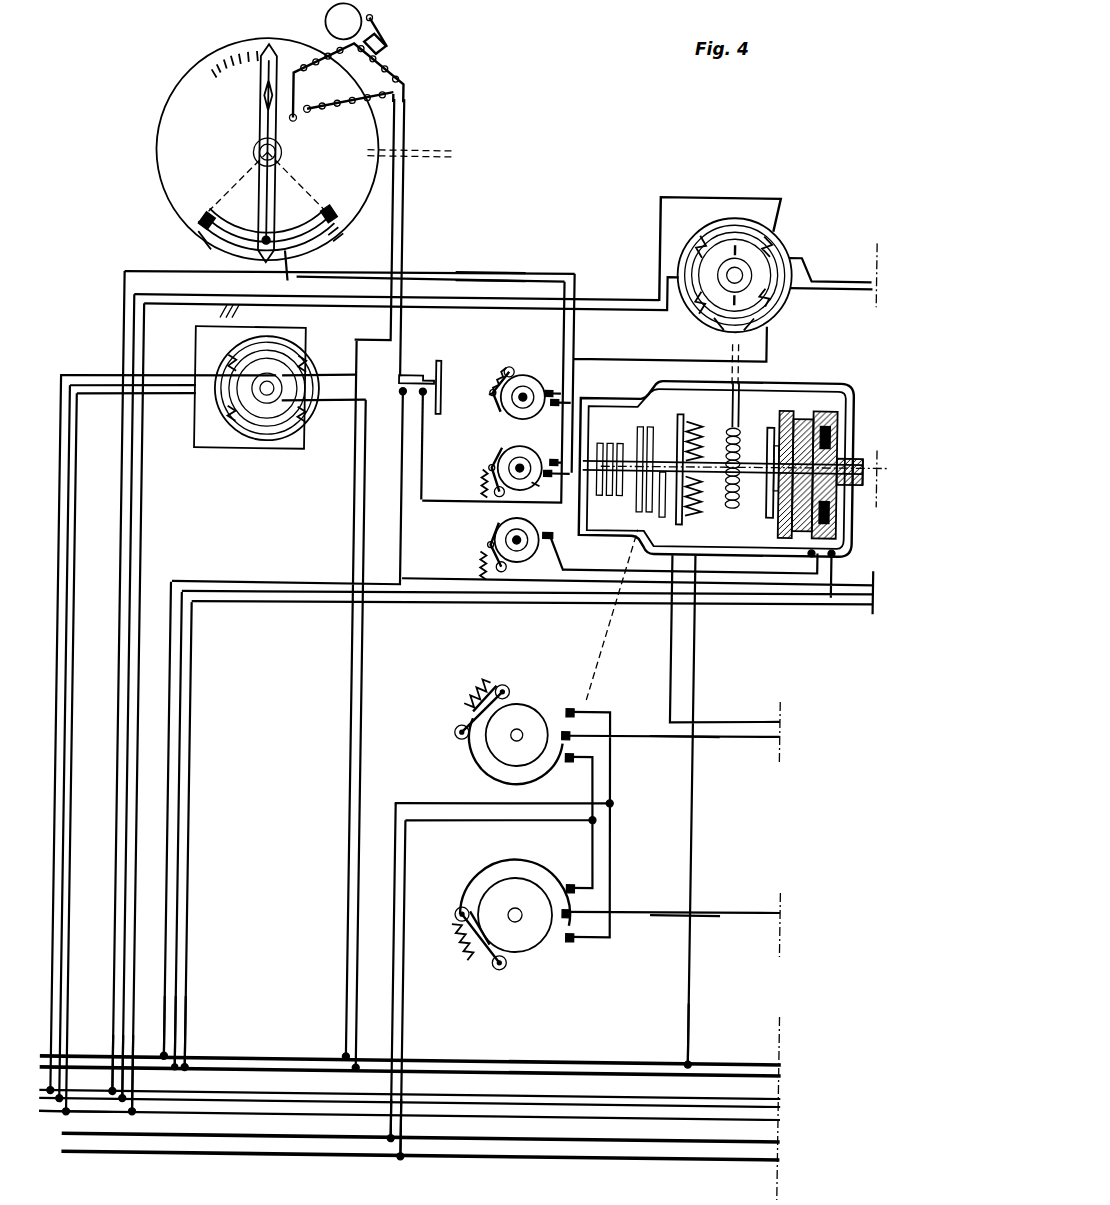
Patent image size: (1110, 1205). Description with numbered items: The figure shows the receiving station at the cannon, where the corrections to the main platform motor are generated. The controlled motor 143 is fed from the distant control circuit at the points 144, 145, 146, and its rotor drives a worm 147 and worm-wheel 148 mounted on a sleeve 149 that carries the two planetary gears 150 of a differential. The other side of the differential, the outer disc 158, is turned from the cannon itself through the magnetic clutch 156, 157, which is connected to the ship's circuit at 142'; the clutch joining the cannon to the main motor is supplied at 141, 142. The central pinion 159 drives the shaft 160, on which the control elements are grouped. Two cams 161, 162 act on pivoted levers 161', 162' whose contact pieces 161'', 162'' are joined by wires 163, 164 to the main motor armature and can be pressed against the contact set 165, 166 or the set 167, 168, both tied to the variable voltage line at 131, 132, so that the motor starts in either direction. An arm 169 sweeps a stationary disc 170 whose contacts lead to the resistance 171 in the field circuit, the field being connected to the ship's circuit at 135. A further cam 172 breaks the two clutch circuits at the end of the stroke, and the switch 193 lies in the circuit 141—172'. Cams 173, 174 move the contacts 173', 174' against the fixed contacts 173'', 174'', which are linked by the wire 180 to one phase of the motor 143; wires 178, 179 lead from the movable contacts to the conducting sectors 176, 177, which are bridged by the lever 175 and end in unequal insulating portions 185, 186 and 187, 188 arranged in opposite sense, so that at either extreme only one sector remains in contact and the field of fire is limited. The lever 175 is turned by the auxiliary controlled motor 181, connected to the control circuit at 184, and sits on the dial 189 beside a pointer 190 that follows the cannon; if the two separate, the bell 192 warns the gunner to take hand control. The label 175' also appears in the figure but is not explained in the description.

The supply point 131 is at (394, 1141).
The supply point 132 is at (409, 1160).
The ship's circuit connection point 135 is at (690, 1066).
The ship's circuit supply point 141 is at (169, 1056).
The ship's circuit supply point 142 is at (231, 1032).
The ship's circuit connection point 142' is at (223, 1026).
The controlled motor 143 is at (727, 220).
The connection point 144 is at (118, 1098).
The connection point 145 is at (128, 1106).
The connection point 146 is at (139, 1118).
The worm 147 is at (732, 428).
The worm-wheel 148 is at (778, 415).
The sleeve 149 is at (750, 540).
The planetary gears 150 is at (827, 403).
The magnetic clutch 156 is at (827, 513).
The magnetic clutch 157 is at (797, 545).
The outer disc 158 is at (782, 545).
The central pinion 159 is at (807, 453).
The shaft 160 is at (640, 530).
The cam 161 is at (516, 719).
The pivoted lever 161' is at (457, 728).
The contact piece 161'' is at (606, 708).
The cam 162 is at (515, 936).
The pivoted lever 162' is at (462, 909).
The contact piece 162'' is at (617, 891).
The wire 163 is at (658, 772).
The wire 164 is at (720, 917).
The contact 165 is at (590, 787).
The contact 166 is at (570, 937).
The contact 167 is at (571, 712).
The contact 168 is at (582, 874).
The arm 169 is at (658, 540).
The stationary disc 170 is at (678, 435).
The resistance 171 is at (698, 417).
The cam 172 is at (491, 548).
The circuit point 172' is at (581, 551).
The cam 173 is at (511, 374).
The movable contact 173' is at (557, 364).
The fixed contact 173'' is at (597, 386).
The cam 174 is at (513, 459).
The movable contact 174' is at (552, 443).
The fixed contact 174'' is at (556, 494).
The lever 175 is at (245, 149).
The dial contact arc 175' is at (385, 185).
The conducting sector 176 is at (204, 246).
The conducting sector 177 is at (248, 250).
The wire 178 is at (493, 270).
The wire 179 is at (513, 279).
The wire 180 is at (767, 315).
The auxiliary controlled motor 181 is at (240, 427).
The connection point 184 is at (75, 1119).
The insulating portion 185 is at (327, 208).
The insulating portion 186 is at (215, 205).
The insulating portion 187 is at (340, 227).
The insulating portion 188 is at (203, 222).
The dial 189 is at (222, 58).
The pointer 190 is at (265, 117).
The electric bell 192 is at (328, 8).
The switch 193 is at (432, 369).